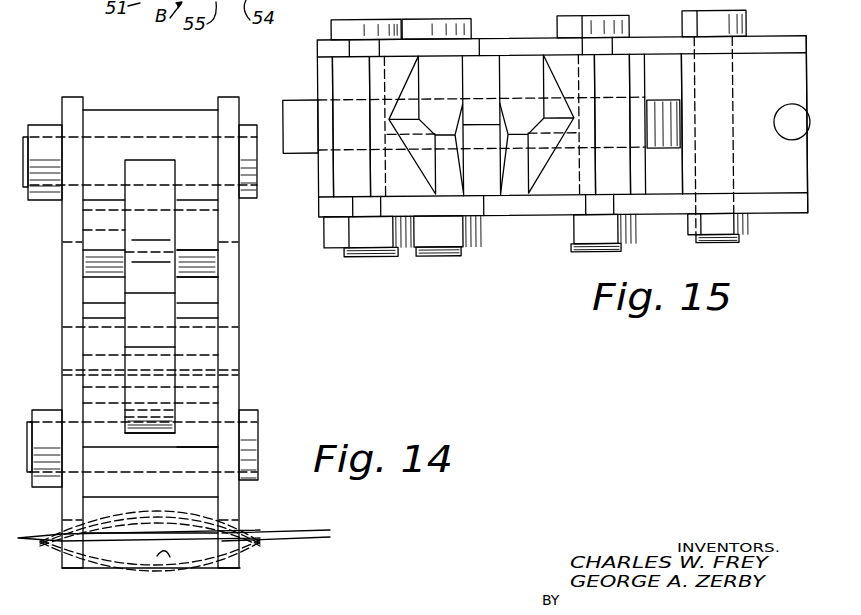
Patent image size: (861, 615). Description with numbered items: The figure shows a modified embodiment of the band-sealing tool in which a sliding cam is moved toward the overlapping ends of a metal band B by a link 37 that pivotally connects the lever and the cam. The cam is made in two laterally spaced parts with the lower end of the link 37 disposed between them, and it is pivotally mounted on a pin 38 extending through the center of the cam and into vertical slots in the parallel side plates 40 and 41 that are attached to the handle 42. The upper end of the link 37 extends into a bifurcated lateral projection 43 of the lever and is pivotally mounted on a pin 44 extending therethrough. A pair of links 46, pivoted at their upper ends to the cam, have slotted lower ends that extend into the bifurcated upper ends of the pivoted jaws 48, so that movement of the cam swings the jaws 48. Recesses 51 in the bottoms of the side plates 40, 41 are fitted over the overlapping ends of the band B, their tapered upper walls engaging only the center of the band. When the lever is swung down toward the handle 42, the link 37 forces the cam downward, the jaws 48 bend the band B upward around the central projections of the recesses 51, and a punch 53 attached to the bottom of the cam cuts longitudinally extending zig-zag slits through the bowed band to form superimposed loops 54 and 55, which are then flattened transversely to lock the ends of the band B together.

In FIG. 14, the link 37 is at (145, 222).
In FIG. 14, the pin 38 is at (232, 332).
In FIG. 14, the side plate 40 is at (238, 270).
In FIG. 15, the side plate 40 is at (640, 52).
In FIG. 14, the side plate 41 is at (68, 287).
In FIG. 15, the side plate 41 is at (640, 203).
In FIG. 15, the handle 42 is at (794, 61).
In FIG. 14, the bifurcated lateral projection 43 is at (97, 240).
In FIG. 14, the pin 44 is at (205, 252).
In FIG. 14, the links 46 is at (160, 367).
In FIG. 15, the links 46 is at (300, 143).
In FIG. 14, the pivoted jaws 48 is at (203, 427).
In FIG. 15, the pivoted jaws 48 is at (345, 78).
In FIG. 15, the recesses 51 is at (523, 46).
In FIG. 15, the punch 53 is at (490, 86).
In FIG. 14, the loop 54 is at (172, 566).
In FIG. 14, the loop 55 is at (104, 566).
In FIG. 14, the metal band B is at (298, 546).